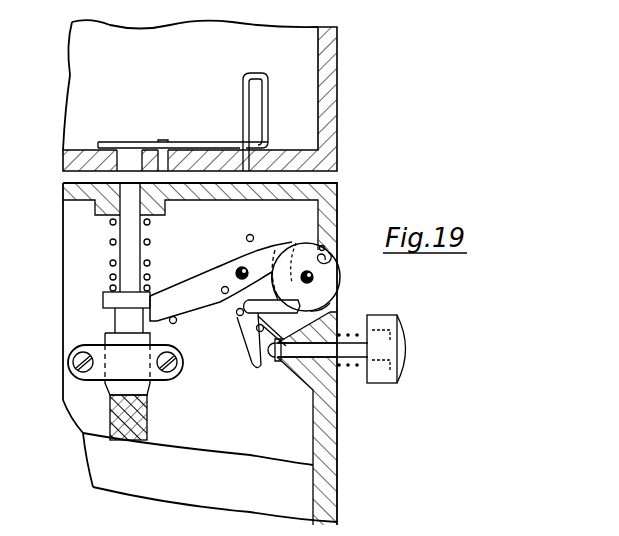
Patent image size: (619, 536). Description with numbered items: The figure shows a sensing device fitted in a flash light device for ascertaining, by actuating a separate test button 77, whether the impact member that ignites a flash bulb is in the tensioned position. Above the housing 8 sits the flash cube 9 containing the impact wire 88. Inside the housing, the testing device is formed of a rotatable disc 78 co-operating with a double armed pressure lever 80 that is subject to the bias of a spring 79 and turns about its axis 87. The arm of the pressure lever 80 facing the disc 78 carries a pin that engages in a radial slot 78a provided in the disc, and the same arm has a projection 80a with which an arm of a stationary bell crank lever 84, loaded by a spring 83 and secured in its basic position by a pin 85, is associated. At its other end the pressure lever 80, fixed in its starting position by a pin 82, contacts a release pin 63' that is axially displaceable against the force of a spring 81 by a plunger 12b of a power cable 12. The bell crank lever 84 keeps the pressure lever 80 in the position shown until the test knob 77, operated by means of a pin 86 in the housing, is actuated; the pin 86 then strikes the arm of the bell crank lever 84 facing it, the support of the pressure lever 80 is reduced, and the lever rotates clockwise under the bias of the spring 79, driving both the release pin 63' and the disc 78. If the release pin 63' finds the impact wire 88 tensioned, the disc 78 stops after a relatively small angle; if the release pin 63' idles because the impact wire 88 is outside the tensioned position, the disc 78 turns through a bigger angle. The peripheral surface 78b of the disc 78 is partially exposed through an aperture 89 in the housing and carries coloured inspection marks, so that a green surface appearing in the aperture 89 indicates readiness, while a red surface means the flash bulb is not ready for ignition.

The flash cube 9 is at (327, 103).
The lower housing 8 is at (342, 193).
The impact wire 88 is at (132, 142).
The spring 81 is at (110, 225).
The release pin 63' is at (110, 254).
The plunger 12b is at (125, 324).
The power cable 12 is at (128, 412).
The pressure lever 80 is at (225, 273).
The spring 79 is at (247, 245).
The axis 87 is at (244, 271).
The rotatable disc 78 is at (325, 279).
The radial slot 78a is at (328, 260).
The peripheral surface 78b is at (327, 282).
The aperture 89 is at (333, 302).
The projection 80a is at (265, 306).
The bell crank lever 84 is at (236, 308).
The pin 82 is at (175, 324).
The spring 83 is at (246, 322).
The pin 85 is at (254, 352).
The pin 86 is at (272, 354).
The test button 77 is at (393, 343).